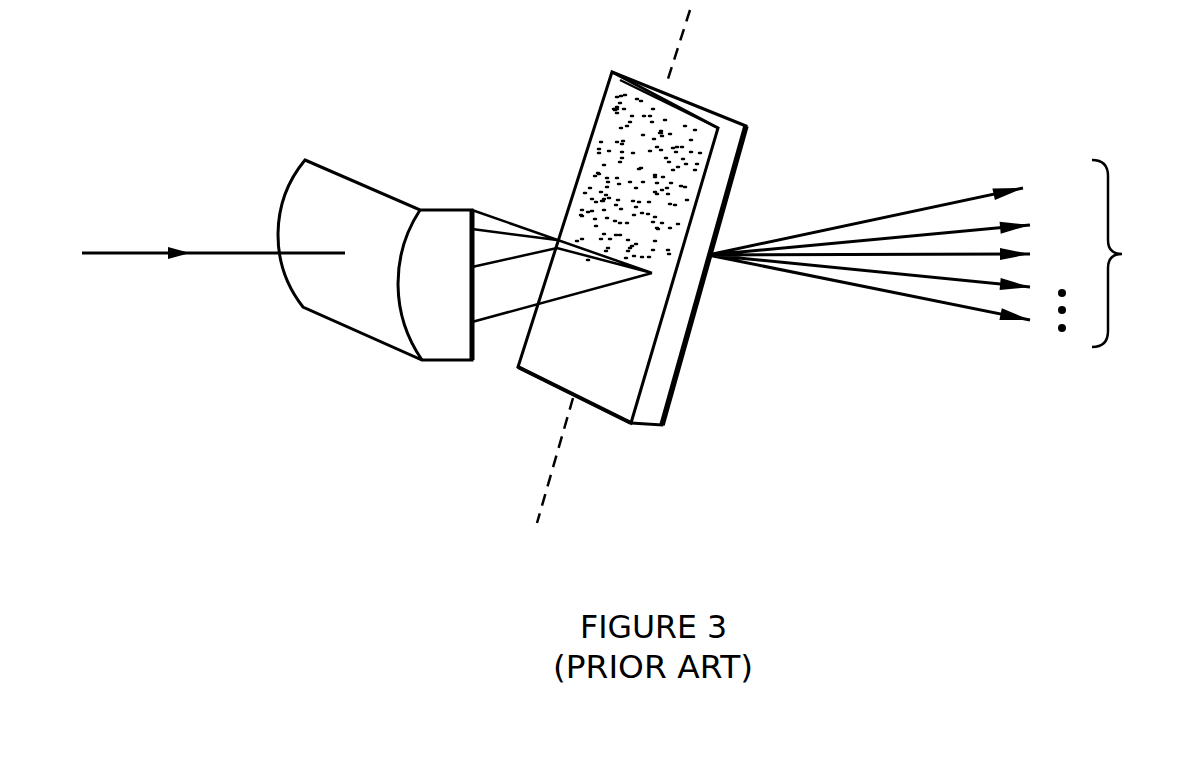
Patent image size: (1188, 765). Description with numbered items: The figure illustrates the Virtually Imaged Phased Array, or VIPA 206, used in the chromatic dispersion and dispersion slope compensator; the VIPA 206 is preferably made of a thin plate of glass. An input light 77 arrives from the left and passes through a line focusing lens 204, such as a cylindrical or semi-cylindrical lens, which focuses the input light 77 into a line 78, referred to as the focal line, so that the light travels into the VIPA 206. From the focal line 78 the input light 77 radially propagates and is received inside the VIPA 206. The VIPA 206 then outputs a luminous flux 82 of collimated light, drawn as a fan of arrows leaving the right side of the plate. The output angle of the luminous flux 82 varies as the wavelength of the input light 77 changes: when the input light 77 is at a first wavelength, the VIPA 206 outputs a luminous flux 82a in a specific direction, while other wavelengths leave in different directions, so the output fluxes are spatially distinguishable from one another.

The input light 77 is at (128, 256).
The line focusing lens 204 is at (389, 152).
The VIPA 206 is at (658, 433).
The focal line 78 is at (658, 278).
The luminous flux at wavelength λ1 82a is at (845, 223).
The luminous flux 82 is at (1102, 253).